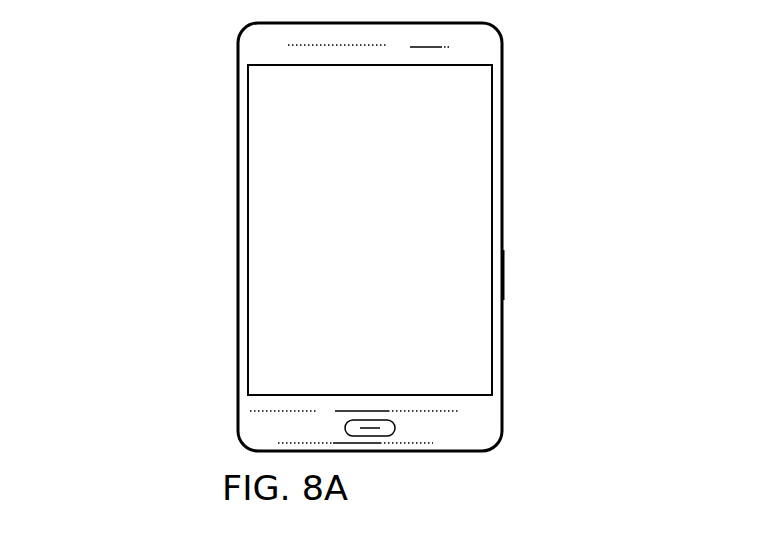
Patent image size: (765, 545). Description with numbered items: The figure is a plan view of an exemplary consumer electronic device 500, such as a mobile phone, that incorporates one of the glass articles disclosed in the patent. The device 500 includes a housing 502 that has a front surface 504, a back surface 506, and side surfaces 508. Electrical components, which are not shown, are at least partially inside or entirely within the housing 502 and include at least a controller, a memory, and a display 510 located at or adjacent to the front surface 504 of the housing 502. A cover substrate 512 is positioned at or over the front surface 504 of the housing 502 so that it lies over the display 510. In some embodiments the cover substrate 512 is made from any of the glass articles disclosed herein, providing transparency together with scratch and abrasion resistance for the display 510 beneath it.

The consumer electronic device 500 is at (527, 72).
The housing 502 is at (258, 43).
The front surface 504 is at (476, 427).
The back surface 506 is at (277, 186).
The side surfaces 508 is at (503, 270).
The display 510 is at (437, 190).
The cover substrate 512 is at (285, 295).